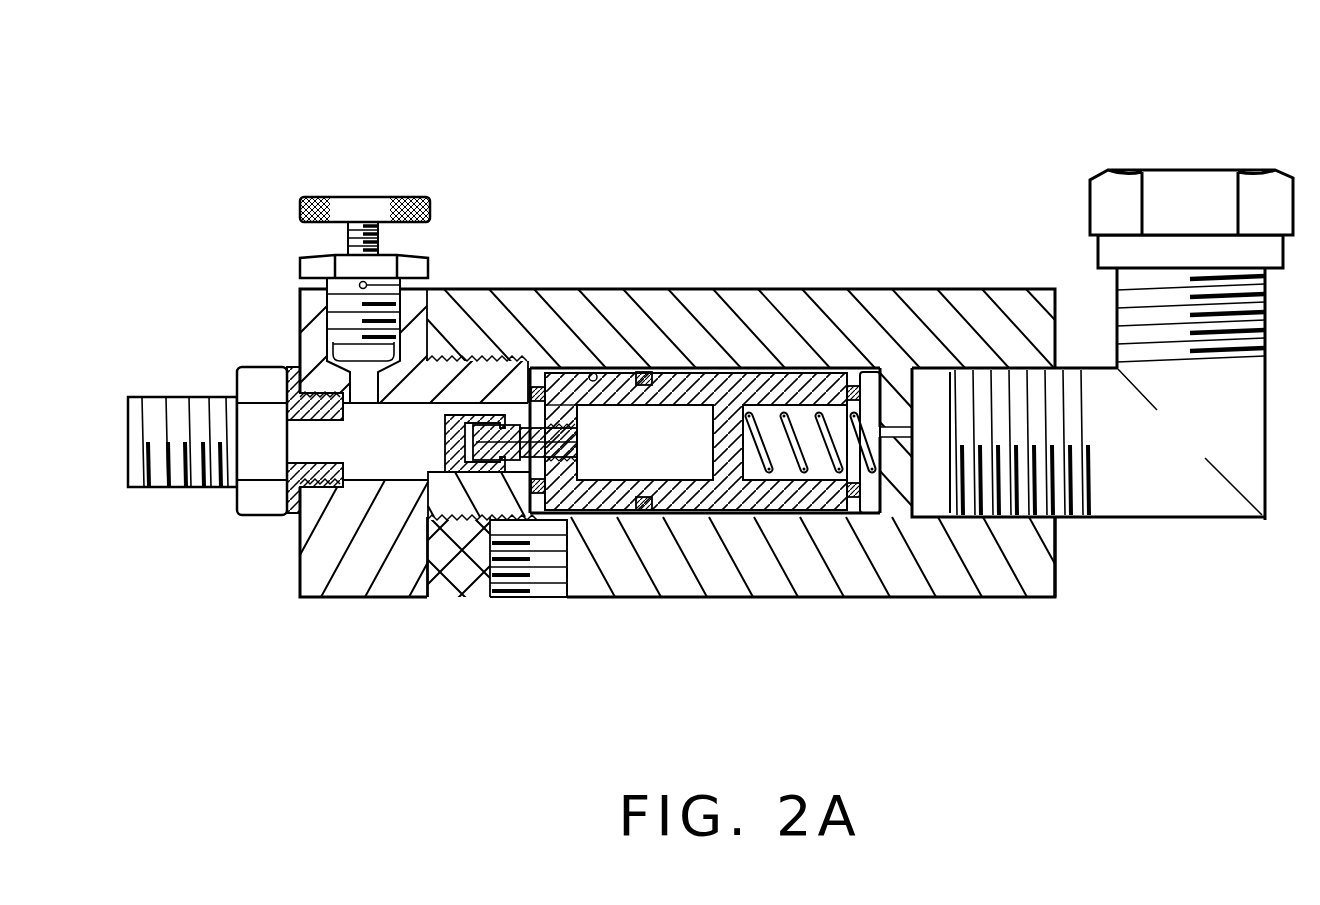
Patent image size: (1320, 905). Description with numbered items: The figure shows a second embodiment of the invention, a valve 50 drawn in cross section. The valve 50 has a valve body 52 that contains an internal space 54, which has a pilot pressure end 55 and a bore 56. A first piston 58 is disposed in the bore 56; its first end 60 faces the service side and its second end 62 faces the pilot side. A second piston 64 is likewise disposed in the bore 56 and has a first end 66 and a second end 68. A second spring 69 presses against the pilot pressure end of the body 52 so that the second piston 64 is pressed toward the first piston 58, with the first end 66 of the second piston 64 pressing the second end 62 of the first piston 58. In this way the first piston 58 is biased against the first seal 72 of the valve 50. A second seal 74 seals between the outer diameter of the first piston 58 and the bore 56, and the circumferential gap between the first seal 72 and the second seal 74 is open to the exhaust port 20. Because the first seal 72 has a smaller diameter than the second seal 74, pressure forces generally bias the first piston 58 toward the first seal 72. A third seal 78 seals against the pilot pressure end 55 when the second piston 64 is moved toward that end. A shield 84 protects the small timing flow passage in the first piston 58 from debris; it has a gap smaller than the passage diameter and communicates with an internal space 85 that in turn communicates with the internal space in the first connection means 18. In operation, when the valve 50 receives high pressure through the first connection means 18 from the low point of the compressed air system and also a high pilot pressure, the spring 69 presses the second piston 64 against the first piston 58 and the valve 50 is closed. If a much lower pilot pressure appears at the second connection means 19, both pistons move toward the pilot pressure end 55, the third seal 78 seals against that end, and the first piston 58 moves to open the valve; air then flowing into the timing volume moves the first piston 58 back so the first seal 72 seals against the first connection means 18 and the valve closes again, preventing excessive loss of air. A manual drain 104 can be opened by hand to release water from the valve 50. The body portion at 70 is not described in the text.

The first connection means 18 is at (150, 380).
The second connection means 19 is at (1158, 452).
The exhaust port 20 is at (537, 577).
The valve 50 is at (928, 182).
The valve body 52 is at (458, 311).
The internal space 54 is at (875, 437).
The pilot pressure end 55 is at (878, 493).
The bore 56 is at (585, 370).
The first piston 58 is at (605, 493).
The first end 60 is at (423, 596).
The second end 62 is at (730, 480).
The second piston 64 is at (777, 497).
The first end 66 is at (697, 405).
The second end 68 is at (868, 380).
The second spring 69 is at (800, 410).
The body end 70 is at (1056, 565).
The first seal 72 is at (530, 378).
The second seal 74 is at (646, 372).
The third seal 78 is at (886, 370).
The shield 84 is at (428, 480).
The internal space 85 is at (357, 420).
The manual drain 104 is at (325, 203).